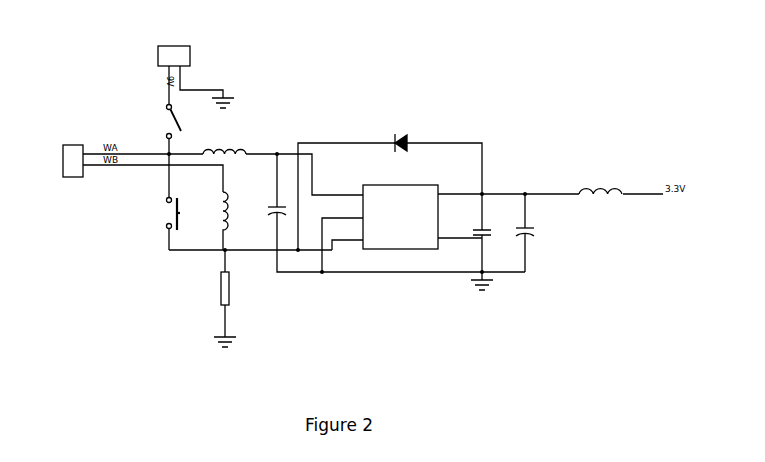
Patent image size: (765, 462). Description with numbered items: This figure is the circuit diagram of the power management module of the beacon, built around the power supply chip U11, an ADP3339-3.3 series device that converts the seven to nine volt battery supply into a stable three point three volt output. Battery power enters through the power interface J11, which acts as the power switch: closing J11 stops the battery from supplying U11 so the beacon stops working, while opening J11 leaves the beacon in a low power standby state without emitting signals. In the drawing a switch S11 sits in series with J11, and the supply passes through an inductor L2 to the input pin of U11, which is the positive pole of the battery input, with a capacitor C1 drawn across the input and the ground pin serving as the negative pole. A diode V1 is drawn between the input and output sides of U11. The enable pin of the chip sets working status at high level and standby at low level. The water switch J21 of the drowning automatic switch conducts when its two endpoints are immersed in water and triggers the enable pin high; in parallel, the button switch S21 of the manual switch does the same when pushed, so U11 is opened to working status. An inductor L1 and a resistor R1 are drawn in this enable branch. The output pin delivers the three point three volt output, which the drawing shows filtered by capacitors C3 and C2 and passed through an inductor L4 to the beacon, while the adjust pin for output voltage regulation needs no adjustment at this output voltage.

The power interface J11 is at (172, 50).
The power switch S11 is at (183, 130).
The water switch J21 is at (72, 156).
The inductor L2 is at (222, 146).
The button switch S21 is at (164, 202).
The inductor L1 is at (212, 221).
The resistor R1 is at (227, 298).
The electrolytic capacitor C1 is at (272, 202).
The diode V1 is at (395, 137).
The power supply chip U11 is at (401, 212).
The capacitor C3 is at (488, 233).
The electrolytic capacitor C2 is at (532, 233).
The output inductor L4 is at (600, 187).